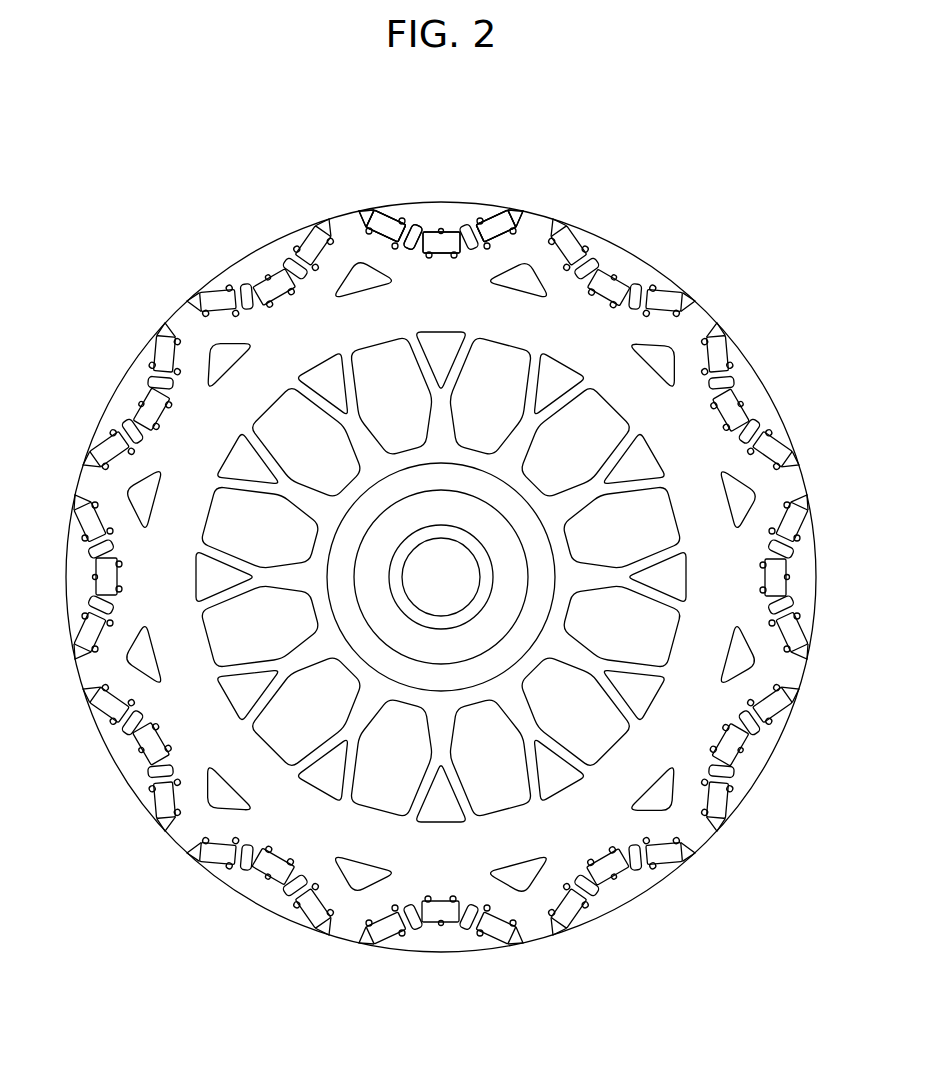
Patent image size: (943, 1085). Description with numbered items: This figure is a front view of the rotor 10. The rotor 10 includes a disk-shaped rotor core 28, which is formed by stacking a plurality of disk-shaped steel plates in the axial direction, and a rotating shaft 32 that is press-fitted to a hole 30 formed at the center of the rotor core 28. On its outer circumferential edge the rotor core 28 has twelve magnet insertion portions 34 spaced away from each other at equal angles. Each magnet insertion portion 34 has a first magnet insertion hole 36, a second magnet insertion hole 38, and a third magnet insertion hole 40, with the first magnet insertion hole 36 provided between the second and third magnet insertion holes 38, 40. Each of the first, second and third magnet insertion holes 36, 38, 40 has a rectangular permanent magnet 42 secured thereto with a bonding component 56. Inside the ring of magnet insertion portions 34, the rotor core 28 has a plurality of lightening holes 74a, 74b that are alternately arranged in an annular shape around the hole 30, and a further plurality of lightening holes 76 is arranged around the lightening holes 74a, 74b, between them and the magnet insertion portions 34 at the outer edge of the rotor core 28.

The rotor 10 is at (676, 160).
The rotor core 28 is at (762, 357).
The hole 30 is at (382, 655).
The rotating shaft 32 is at (460, 647).
The magnet insertion portion 34 is at (618, 261).
The first magnet insertion hole 36 is at (445, 224).
The second magnet insertion hole 38 is at (362, 200).
The third magnet insertion hole 40 is at (520, 199).
The permanent magnet 42 is at (383, 223).
The bonding component 56 is at (413, 227).
The lightening hole 74a is at (490, 805).
The lightening hole 74b is at (446, 820).
The lightening hole 76 is at (358, 883).